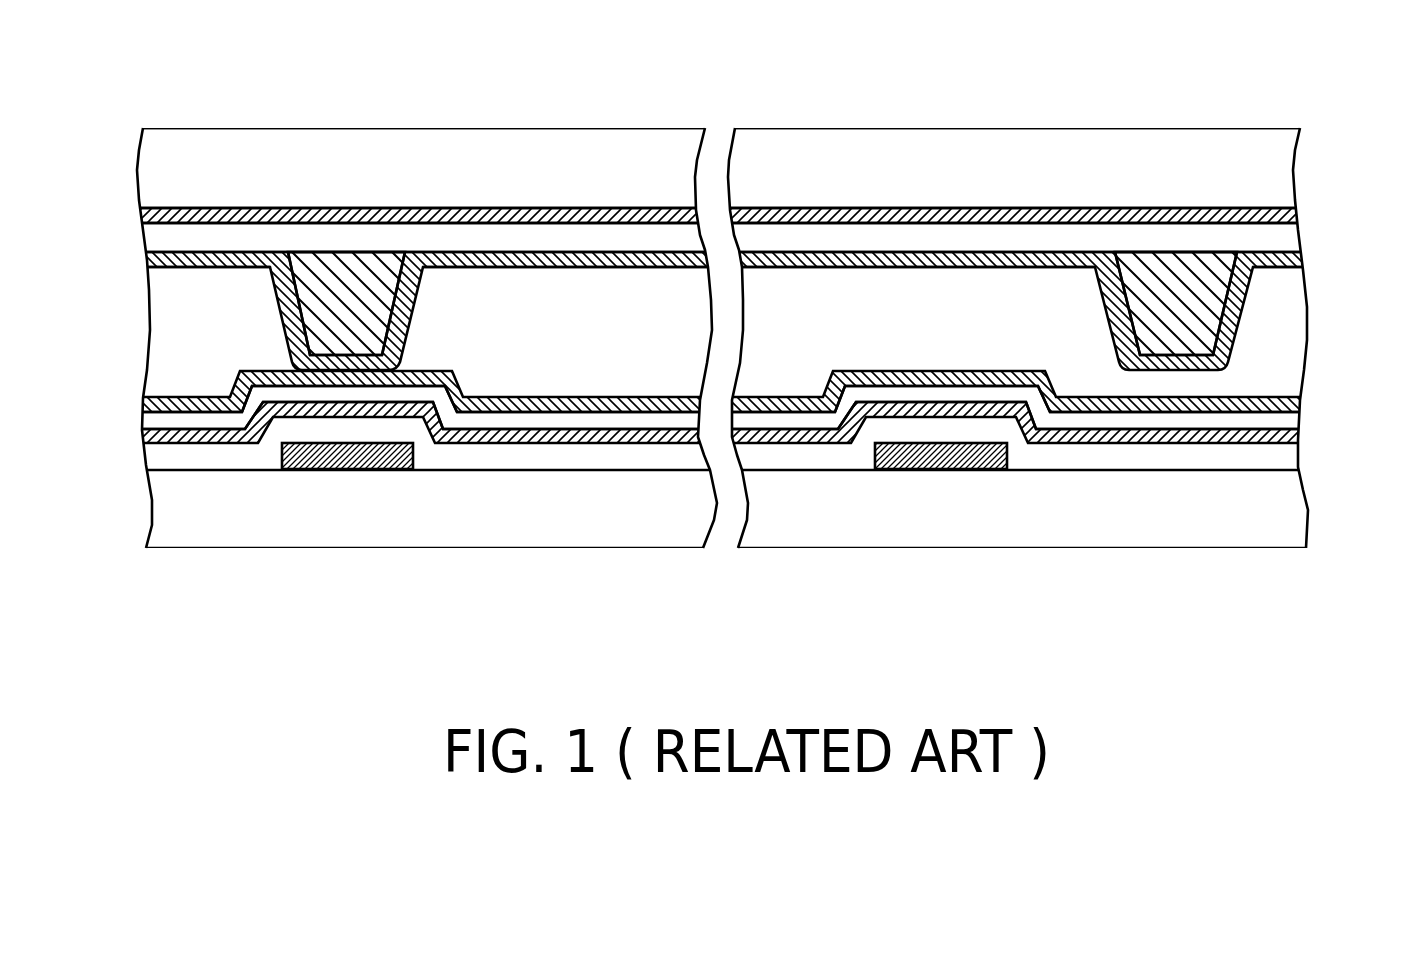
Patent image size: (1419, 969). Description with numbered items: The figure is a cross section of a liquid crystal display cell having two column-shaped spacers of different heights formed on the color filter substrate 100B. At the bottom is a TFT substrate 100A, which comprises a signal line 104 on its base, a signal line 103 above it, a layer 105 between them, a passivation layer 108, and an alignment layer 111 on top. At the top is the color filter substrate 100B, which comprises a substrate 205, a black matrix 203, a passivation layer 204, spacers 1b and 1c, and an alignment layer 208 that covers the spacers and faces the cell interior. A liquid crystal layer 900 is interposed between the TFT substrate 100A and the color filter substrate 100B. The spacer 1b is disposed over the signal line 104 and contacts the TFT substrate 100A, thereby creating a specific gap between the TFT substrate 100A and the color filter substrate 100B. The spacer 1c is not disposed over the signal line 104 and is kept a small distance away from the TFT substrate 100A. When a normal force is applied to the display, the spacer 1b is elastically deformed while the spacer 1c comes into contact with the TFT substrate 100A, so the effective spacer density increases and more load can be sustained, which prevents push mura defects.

The TFT substrate 100A is at (268, 550).
The color filter substrate 100B is at (267, 127).
The substrate 205 is at (185, 170).
The black matrix 203 is at (140, 217).
The passivation layer 204 is at (185, 240).
The alignment layer 208 is at (140, 263).
The spacer 1b is at (327, 303).
The spacer 1c is at (1205, 300).
The liquid crystal layer 900 is at (185, 328).
The alignment layer 111 is at (200, 407).
The passivation layer 108 is at (185, 420).
The signal line 103 is at (185, 437).
The insulating layer 105 is at (185, 462).
The signal line 104 is at (347, 460).